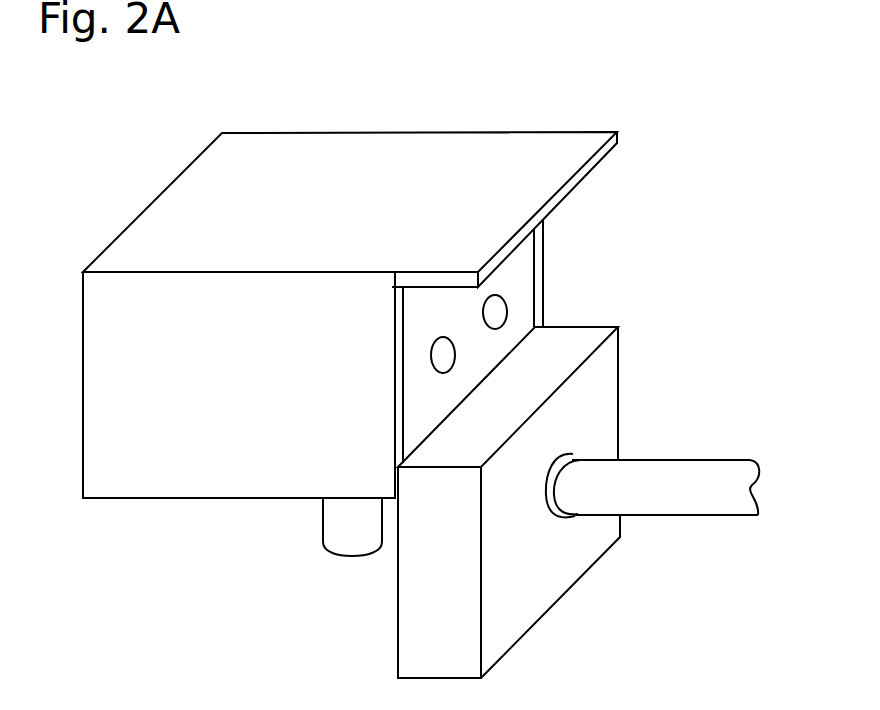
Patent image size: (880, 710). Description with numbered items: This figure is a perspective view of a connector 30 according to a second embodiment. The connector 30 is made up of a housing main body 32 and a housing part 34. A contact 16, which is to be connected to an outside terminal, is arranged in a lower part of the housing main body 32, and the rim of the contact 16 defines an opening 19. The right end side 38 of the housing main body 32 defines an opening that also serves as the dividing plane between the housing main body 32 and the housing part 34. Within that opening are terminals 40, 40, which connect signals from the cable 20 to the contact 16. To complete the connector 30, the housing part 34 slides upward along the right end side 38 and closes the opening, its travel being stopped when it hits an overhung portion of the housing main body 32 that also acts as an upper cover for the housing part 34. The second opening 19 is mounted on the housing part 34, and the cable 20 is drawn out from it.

The connector 30 is at (523, 103).
The housing main body 32 is at (177, 483).
The contact 16 is at (352, 537).
The right end side 38 is at (545, 265).
The terminals 40 is at (498, 310).
The housing part 34 is at (607, 372).
The cable 20 is at (700, 473).
The opening 19 is at (547, 517).